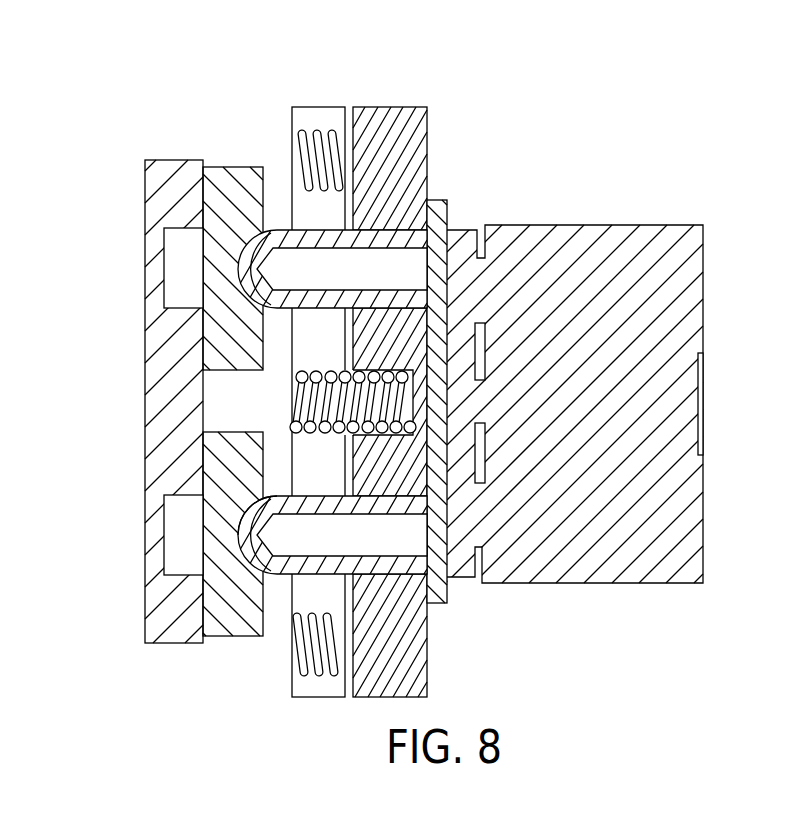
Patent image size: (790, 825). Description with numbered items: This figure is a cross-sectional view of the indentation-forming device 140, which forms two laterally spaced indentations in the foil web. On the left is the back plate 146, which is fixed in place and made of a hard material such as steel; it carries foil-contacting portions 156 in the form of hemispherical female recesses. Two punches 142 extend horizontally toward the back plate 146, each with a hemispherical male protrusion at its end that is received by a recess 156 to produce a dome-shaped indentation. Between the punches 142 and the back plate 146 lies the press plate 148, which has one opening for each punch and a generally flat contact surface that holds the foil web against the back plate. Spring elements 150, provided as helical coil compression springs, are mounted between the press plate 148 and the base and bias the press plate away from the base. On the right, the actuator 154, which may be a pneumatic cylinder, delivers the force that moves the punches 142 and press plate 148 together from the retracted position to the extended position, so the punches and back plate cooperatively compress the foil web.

The indentation-forming device 140 is at (387, 369).
The punch 142 is at (283, 229).
The back plate 146 is at (116, 157).
The press plate 148 is at (291, 123).
The spring element 150 is at (318, 125).
The actuator 154 is at (670, 188).
The foil-contacting portion 156 is at (258, 497).